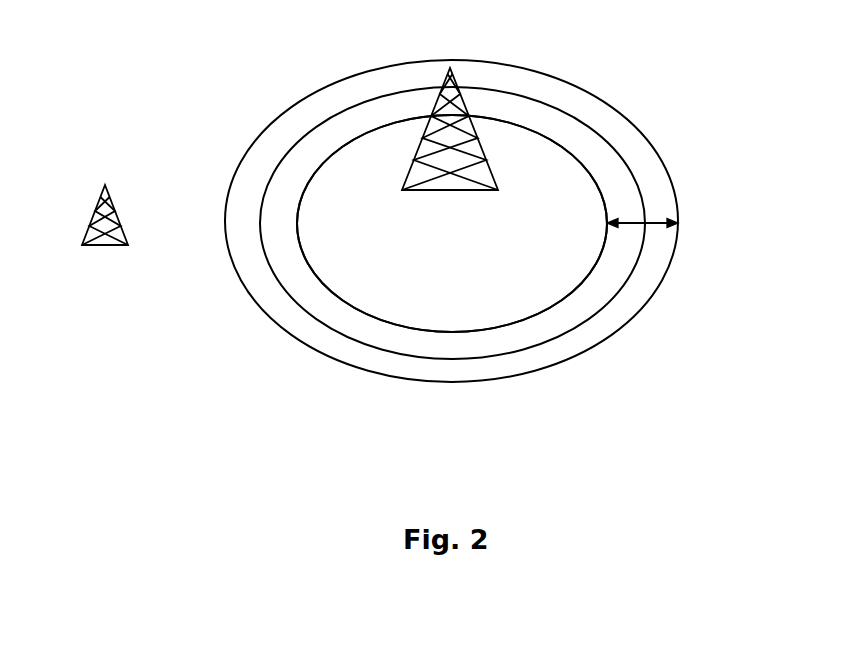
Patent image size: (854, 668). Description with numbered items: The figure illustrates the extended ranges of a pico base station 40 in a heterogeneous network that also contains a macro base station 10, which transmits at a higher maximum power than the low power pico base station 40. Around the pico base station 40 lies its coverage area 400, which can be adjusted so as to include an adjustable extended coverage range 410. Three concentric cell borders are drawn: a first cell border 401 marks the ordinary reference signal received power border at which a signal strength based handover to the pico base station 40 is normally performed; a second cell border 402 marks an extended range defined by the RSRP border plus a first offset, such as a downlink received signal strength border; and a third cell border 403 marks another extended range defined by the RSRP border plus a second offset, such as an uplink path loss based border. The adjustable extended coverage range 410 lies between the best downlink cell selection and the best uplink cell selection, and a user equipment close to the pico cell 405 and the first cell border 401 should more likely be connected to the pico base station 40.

The first base station 10 is at (98, 201).
The second base station 40 is at (450, 84).
The coverage area 400 is at (572, 178).
The first cell border 401 is at (297, 224).
The second cell border 402 is at (260, 223).
The third cell border 403 is at (225, 222).
The pico cell 405 is at (450, 383).
The adjustable extended coverage range 410 is at (648, 227).